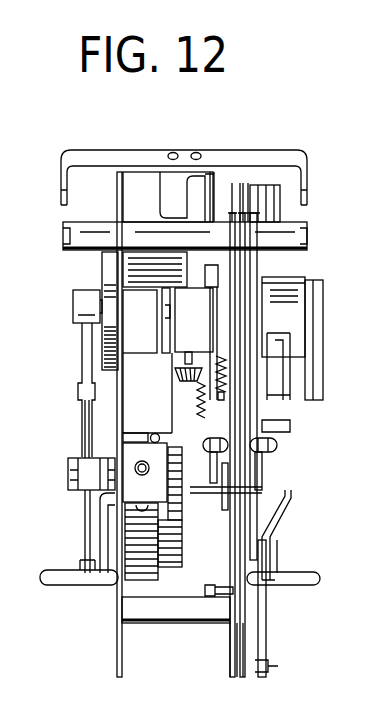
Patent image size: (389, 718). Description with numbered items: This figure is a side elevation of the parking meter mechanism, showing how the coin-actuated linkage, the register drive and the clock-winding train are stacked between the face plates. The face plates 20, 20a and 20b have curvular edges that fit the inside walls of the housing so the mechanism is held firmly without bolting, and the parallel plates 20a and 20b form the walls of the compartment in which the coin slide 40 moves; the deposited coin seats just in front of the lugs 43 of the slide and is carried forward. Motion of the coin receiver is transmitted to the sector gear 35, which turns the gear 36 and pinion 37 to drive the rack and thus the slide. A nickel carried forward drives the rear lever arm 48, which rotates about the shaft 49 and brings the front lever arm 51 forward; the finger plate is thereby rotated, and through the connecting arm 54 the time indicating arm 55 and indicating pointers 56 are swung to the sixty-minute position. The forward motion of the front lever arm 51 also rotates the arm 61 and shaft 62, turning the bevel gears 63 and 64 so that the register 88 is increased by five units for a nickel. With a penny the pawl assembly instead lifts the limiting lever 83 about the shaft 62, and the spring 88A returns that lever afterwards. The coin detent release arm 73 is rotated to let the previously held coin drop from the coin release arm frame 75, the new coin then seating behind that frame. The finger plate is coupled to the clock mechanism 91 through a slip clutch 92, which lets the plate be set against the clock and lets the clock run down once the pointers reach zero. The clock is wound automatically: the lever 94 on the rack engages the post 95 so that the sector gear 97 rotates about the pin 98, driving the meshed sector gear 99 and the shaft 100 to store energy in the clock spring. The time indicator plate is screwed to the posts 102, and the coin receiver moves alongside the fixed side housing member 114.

The face plate 20 is at (118, 628).
The face plate 20a is at (244, 322).
The face plate 20b is at (245, 484).
The sector gear 35 is at (210, 481).
The gear 36 is at (172, 575).
The pinion 37 is at (143, 598).
The coin carrier or slide 40 is at (199, 469).
The lugs 43 is at (252, 452).
The rear lever arm 48 is at (258, 272).
The shaft 49 is at (282, 204).
The front lever arm 51 is at (247, 262).
The connecting arm 54 is at (213, 190).
The time indicating arm 55 is at (222, 158).
The indicating pointers 56 is at (60, 180).
The arm 61 is at (270, 385).
The shaft 62 is at (218, 590).
The bevel gear 63 is at (198, 393).
The bevel gear 64 is at (190, 378).
The coin detent release arm 73 is at (235, 468).
The coin release arm frame 75 is at (266, 640).
The limiting lever 83 is at (145, 472).
The register 88 is at (168, 342).
The spring 88A is at (215, 360).
The clock mechanism 91 is at (168, 197).
The slip clutch 92 is at (200, 282).
The lever 94 is at (100, 535).
The post 95 is at (80, 568).
The sector gear 97 is at (84, 428).
The pin 98 is at (70, 475).
The sector gear 99 is at (83, 360).
The shaft 100 is at (80, 307).
The posts 102 is at (62, 232).
The side housing member 114 is at (316, 355).